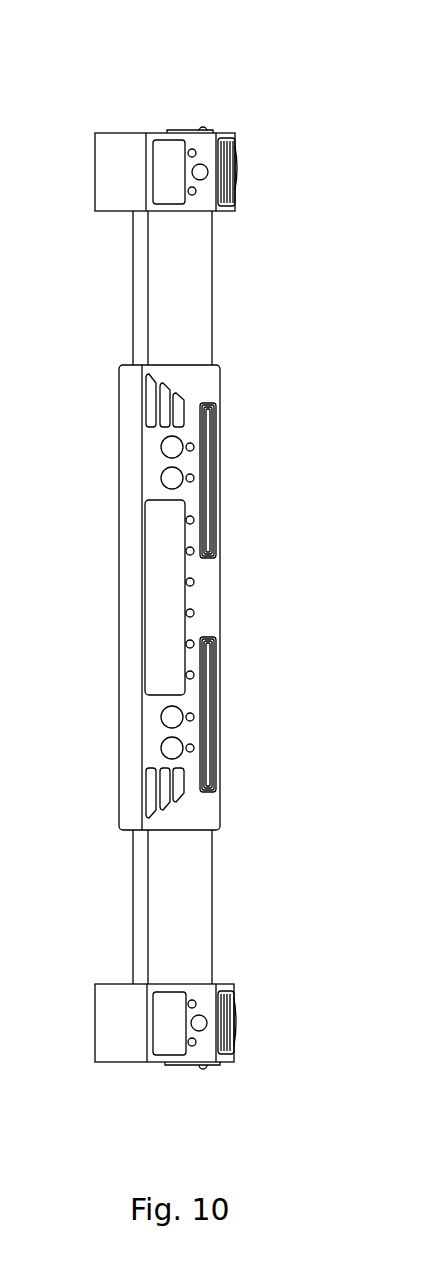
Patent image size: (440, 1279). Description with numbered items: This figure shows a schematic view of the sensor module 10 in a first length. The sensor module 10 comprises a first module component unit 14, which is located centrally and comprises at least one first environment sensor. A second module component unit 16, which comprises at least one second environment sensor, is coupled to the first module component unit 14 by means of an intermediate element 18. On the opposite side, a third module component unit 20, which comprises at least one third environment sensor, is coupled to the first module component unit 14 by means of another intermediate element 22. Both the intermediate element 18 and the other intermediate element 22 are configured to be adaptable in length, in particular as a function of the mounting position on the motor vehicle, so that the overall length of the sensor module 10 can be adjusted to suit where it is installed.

The sensor module 10 is at (161, 99).
The first module component unit 14 is at (128, 563).
The second module component unit 16 is at (120, 180).
The intermediate element 18 is at (162, 335).
The third module component unit 20 is at (108, 1027).
The other intermediate element 22 is at (147, 925).